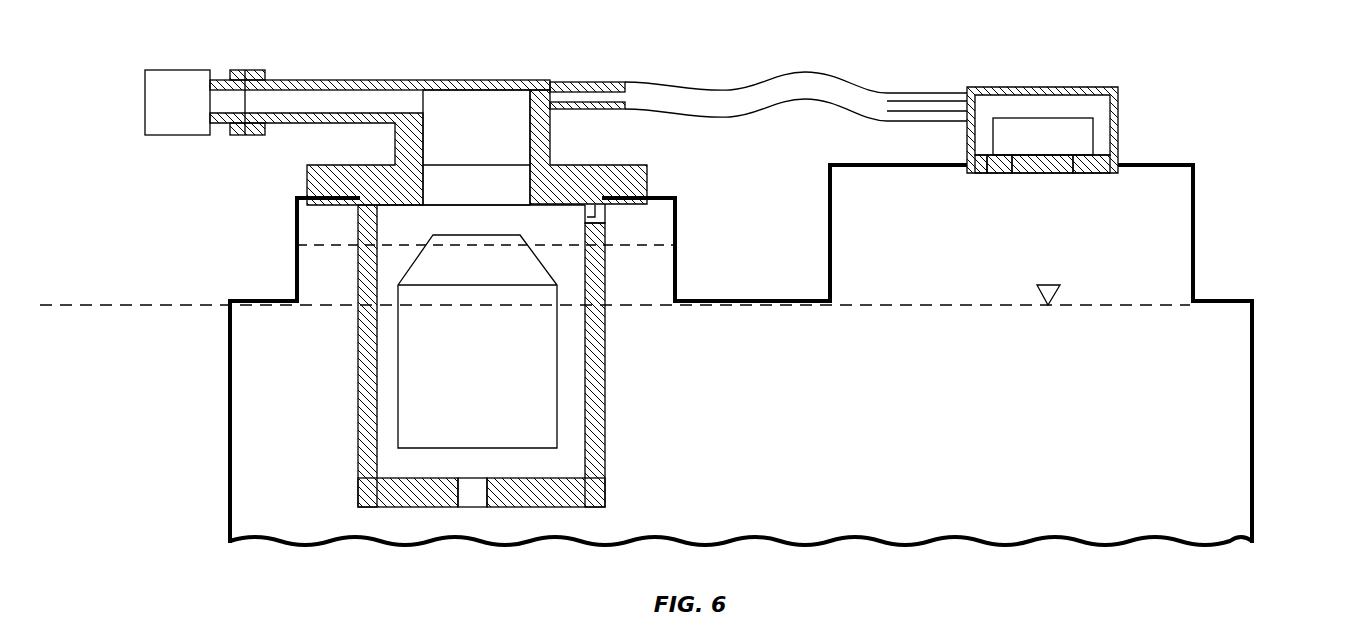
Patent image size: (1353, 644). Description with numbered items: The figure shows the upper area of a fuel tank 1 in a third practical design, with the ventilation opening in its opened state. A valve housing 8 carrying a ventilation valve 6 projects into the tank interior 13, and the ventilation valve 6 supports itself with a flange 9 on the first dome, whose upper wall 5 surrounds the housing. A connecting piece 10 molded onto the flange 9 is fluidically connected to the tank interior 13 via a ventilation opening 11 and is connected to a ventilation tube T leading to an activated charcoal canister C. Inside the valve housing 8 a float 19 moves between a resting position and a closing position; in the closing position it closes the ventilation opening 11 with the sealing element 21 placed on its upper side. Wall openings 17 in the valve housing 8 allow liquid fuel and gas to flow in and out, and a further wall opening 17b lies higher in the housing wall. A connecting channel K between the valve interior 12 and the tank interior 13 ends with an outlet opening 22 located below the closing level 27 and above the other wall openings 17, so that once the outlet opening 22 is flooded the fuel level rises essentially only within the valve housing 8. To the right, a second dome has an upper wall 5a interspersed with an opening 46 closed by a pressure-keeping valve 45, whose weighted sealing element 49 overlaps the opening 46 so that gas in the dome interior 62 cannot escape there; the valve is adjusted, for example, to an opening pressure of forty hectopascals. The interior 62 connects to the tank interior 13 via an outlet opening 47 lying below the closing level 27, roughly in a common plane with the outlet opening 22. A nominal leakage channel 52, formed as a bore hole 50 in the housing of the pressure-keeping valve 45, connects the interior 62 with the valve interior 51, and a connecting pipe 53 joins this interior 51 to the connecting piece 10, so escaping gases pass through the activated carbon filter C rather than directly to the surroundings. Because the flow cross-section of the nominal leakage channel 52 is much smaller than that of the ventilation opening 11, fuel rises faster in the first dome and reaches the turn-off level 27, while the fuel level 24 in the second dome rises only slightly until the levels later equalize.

The fuel tank 1 is at (190, 484).
The housing wall 5 is at (665, 197).
The upper wall 5a is at (860, 164).
The ventilation valve 6 is at (360, 423).
The valve housing 8 is at (597, 428).
The flange 9 is at (308, 178).
The connecting piece 10 is at (440, 80).
The ventilation opening 11 is at (480, 188).
The valve interior 12 is at (543, 468).
The tank interior 13 is at (1175, 479).
The wall openings 17 is at (470, 493).
The vent opening 17b is at (593, 215).
The float 19 is at (440, 431).
The sealing element 21 is at (430, 269).
The outlet opening 22 is at (300, 299).
The wall step 24 is at (1152, 300).
The closing level 27 is at (330, 244).
The pressure-keeping valve 45 is at (1118, 87).
The opening 46 is at (1043, 163).
The outlet opening 47 is at (830, 301).
The weighted sealing element 49 is at (1023, 128).
The bore hole 50 is at (987, 166).
The interior of the pressure-keeping valve 51 is at (1035, 108).
The nominal leakage channel 52 is at (987, 166).
The connecting pipe 53 is at (800, 72).
The interior of the dome 62 is at (1167, 212).
The activated charcoal canister C is at (195, 70).
The ventilation tube T is at (250, 72).
The connecting channel K is at (648, 267).